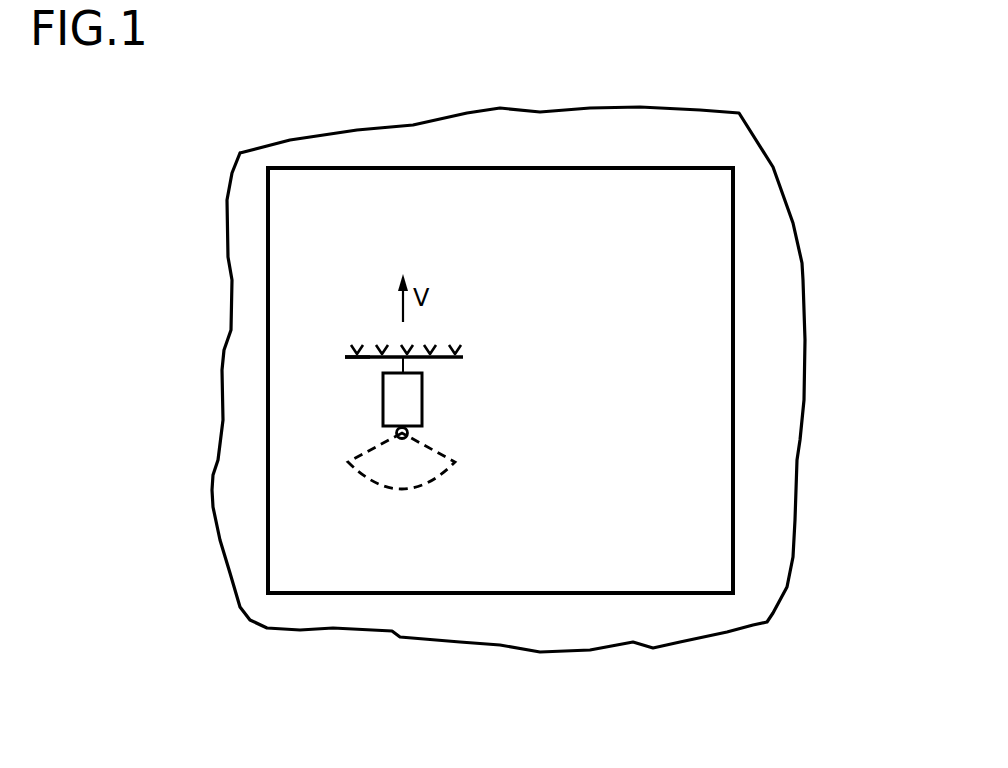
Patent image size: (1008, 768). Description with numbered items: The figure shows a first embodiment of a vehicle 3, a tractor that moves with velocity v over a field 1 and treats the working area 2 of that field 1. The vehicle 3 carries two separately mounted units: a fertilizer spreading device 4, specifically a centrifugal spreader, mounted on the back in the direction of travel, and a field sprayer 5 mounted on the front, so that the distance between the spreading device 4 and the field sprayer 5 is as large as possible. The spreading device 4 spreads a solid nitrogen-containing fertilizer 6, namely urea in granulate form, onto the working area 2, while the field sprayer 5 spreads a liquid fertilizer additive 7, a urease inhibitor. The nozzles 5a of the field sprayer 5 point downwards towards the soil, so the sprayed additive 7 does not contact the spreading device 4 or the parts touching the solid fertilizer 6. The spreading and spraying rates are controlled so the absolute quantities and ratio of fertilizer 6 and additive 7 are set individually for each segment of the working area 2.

The field 1 is at (780, 408).
The working area 2 is at (708, 193).
The vehicle 3 is at (402, 402).
The fertilizer spreading device 4 is at (438, 430).
The field sprayer 5 is at (486, 364).
The nozzles 5a is at (353, 370).
The fertilizer 6 is at (424, 495).
The fertilizer additive 7 is at (355, 337).